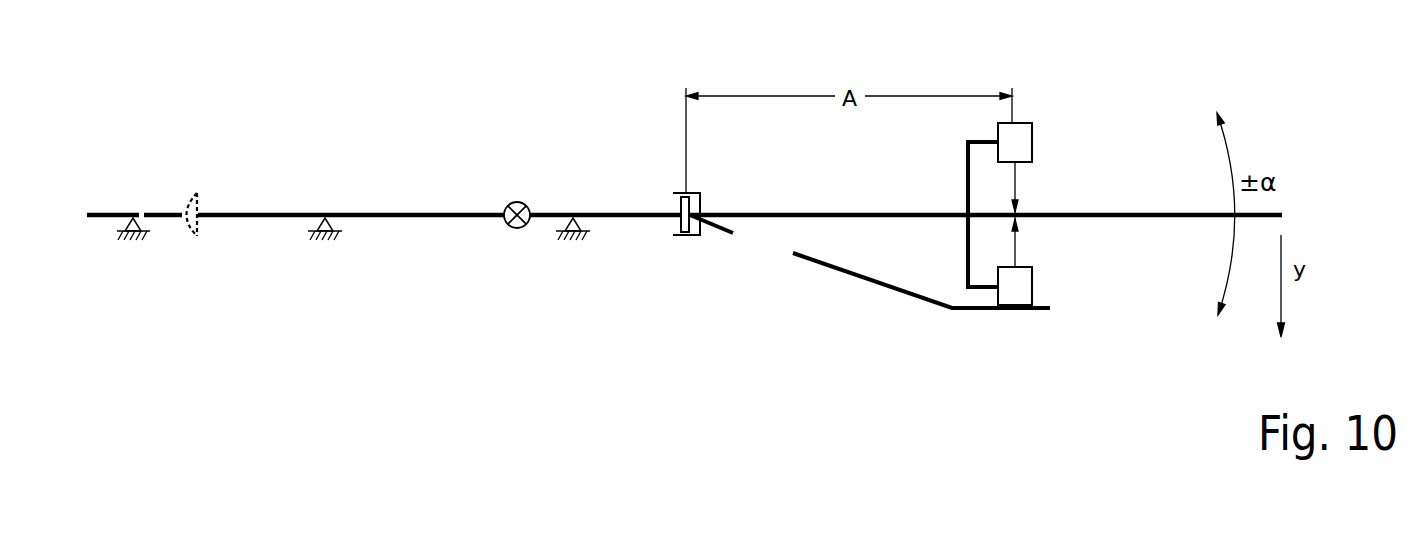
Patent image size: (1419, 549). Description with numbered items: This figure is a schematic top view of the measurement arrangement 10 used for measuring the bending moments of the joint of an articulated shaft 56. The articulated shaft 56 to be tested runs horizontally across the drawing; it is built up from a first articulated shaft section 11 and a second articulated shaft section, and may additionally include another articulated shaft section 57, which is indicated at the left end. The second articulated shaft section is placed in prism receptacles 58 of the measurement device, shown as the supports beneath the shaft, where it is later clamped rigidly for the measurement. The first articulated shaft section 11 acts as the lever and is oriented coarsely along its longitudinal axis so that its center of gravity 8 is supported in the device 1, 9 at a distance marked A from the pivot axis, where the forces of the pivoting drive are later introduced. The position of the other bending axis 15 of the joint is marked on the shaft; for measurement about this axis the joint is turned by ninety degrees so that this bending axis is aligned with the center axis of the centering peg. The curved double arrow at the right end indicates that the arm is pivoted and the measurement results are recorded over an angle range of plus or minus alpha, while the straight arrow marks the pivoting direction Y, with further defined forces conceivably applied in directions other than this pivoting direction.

The measurement arrangement 10 is at (984, 156).
The articulated shaft 56 is at (684, 142).
The another articulated shaft section 57 is at (161, 212).
The prism receptacles 58 is at (326, 240).
The other bending axis 15 is at (673, 200).
The first articulated shaft section 11 is at (872, 212).
The device 1 is at (948, 214).
The sensor holder 9 is at (966, 252).
The center of gravity 8 is at (1018, 208).